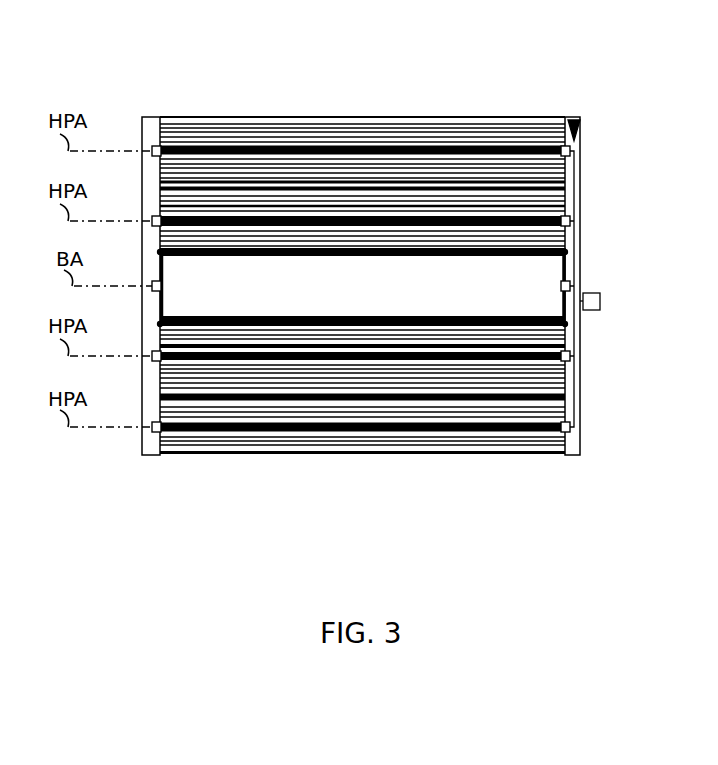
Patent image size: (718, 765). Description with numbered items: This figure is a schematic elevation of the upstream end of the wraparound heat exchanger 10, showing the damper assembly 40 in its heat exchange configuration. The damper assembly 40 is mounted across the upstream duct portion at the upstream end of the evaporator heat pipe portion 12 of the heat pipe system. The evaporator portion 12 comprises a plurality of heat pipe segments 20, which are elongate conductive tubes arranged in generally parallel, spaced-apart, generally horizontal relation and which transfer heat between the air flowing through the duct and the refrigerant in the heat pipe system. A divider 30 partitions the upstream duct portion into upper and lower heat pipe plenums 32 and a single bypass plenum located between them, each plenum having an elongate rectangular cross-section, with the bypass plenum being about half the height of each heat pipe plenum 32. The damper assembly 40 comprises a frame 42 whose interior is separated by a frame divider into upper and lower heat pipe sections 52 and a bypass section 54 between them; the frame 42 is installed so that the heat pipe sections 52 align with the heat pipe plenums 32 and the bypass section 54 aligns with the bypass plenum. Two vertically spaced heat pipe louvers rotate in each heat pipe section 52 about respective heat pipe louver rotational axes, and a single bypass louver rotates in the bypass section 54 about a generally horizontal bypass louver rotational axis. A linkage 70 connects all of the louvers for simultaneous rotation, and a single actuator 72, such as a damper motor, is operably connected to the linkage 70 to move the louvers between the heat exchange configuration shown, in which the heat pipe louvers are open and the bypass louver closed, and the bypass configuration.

The heat exchanger 10 is at (238, 635).
The evaporator heat pipe portion 12 is at (373, 437).
The heat pipe segments 20 is at (446, 190).
The divider 30 is at (558, 243).
The heat pipe plenums 32 is at (542, 158).
The damper assembly 40 is at (133, 550).
The frame 42 is at (573, 440).
The heat pipe sections 52 is at (152, 172).
The bypass section 54 is at (154, 298).
The linkage 70 is at (566, 112).
The actuator 72 is at (583, 302).